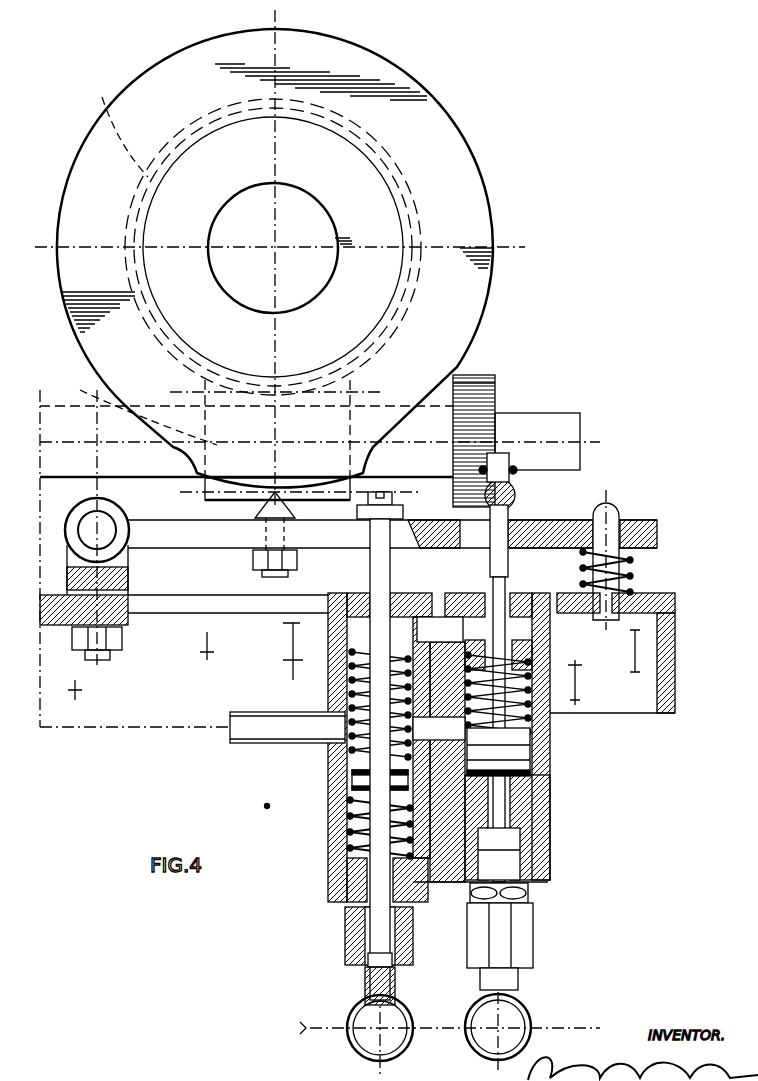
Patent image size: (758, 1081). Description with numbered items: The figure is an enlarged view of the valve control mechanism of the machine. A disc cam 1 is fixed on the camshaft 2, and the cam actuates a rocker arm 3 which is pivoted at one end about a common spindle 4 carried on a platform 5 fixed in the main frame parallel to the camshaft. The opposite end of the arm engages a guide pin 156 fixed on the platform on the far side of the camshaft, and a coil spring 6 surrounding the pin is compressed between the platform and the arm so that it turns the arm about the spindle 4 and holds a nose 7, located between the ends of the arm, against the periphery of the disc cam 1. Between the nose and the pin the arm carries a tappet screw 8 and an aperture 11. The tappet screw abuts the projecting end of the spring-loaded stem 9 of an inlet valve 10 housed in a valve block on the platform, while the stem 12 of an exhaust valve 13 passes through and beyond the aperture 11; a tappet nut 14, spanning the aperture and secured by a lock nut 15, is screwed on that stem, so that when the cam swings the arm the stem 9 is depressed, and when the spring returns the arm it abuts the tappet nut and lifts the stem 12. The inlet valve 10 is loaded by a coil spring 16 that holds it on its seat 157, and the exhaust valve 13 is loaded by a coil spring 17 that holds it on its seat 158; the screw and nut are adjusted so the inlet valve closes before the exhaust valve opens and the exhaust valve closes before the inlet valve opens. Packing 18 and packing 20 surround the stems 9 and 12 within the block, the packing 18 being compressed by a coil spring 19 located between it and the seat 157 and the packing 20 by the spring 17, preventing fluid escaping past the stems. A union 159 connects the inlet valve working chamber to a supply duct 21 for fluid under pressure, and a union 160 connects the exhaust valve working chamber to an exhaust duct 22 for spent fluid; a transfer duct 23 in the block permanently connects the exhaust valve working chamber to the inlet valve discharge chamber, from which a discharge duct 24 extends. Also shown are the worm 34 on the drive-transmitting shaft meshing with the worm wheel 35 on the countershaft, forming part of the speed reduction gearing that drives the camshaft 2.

The disc cam 1 is at (478, 217).
The shaft 2 is at (308, 214).
The worm wheel 35 is at (120, 128).
The worm 34 is at (138, 409).
The spindle 4 is at (75, 524).
The platform 5 is at (42, 603).
The nose 7 is at (268, 510).
The tappet screw 8 is at (366, 556).
The rocker arm 3 is at (565, 530).
The tappet nut 14 is at (516, 500).
The lock nut 15 is at (505, 462).
The aperture 11 is at (520, 532).
The guide pin 156 is at (620, 514).
The coil spring 6 is at (633, 578).
The packing 20 is at (532, 656).
The coil spring 17 is at (548, 717).
The stem 12 is at (550, 742).
The exhaust valve 13 is at (536, 770).
The seat 158 is at (549, 787).
The coil spring 16 is at (345, 838).
The transfer duct 23 is at (462, 884).
The stem 9 is at (340, 722).
The discharge duct 24 is at (240, 742).
The packing 18 is at (347, 662).
The coil spring 19 is at (350, 778).
The inlet valve 10 is at (350, 800).
The seat 157 is at (266, 808).
The union 159 is at (348, 937).
The union 160 is at (525, 910).
The supply duct 21 is at (365, 1043).
The exhaust duct 22 is at (518, 1040).